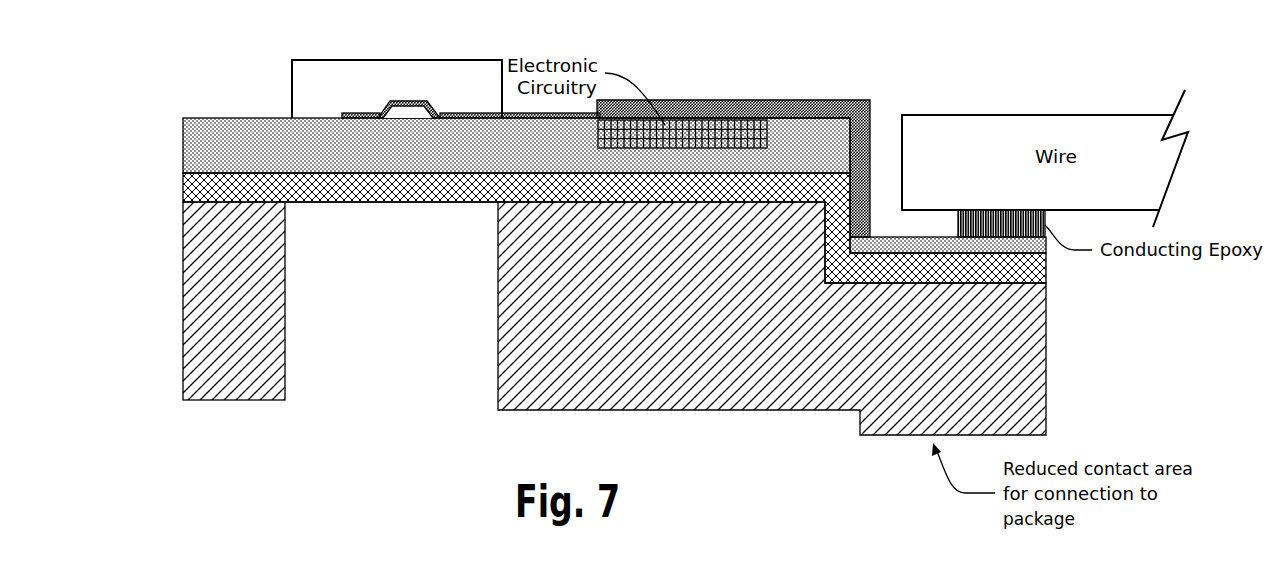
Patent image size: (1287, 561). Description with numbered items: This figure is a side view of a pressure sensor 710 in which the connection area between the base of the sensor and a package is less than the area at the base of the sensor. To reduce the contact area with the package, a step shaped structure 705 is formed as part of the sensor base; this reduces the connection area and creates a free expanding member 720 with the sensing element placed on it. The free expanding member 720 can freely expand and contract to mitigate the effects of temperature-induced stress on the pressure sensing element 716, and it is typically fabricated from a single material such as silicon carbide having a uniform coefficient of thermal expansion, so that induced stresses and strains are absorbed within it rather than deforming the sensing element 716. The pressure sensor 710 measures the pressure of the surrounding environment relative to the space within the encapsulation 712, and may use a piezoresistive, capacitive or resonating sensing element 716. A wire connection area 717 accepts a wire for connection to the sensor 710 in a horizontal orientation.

The step shaped structure 705 is at (808, 425).
The pressure sensor 710 is at (156, 137).
The encapsulation 712 is at (292, 85).
The pressure sensing element 716 is at (425, 100).
The wire connection area 717 is at (887, 90).
The free expanding member 720 is at (498, 410).